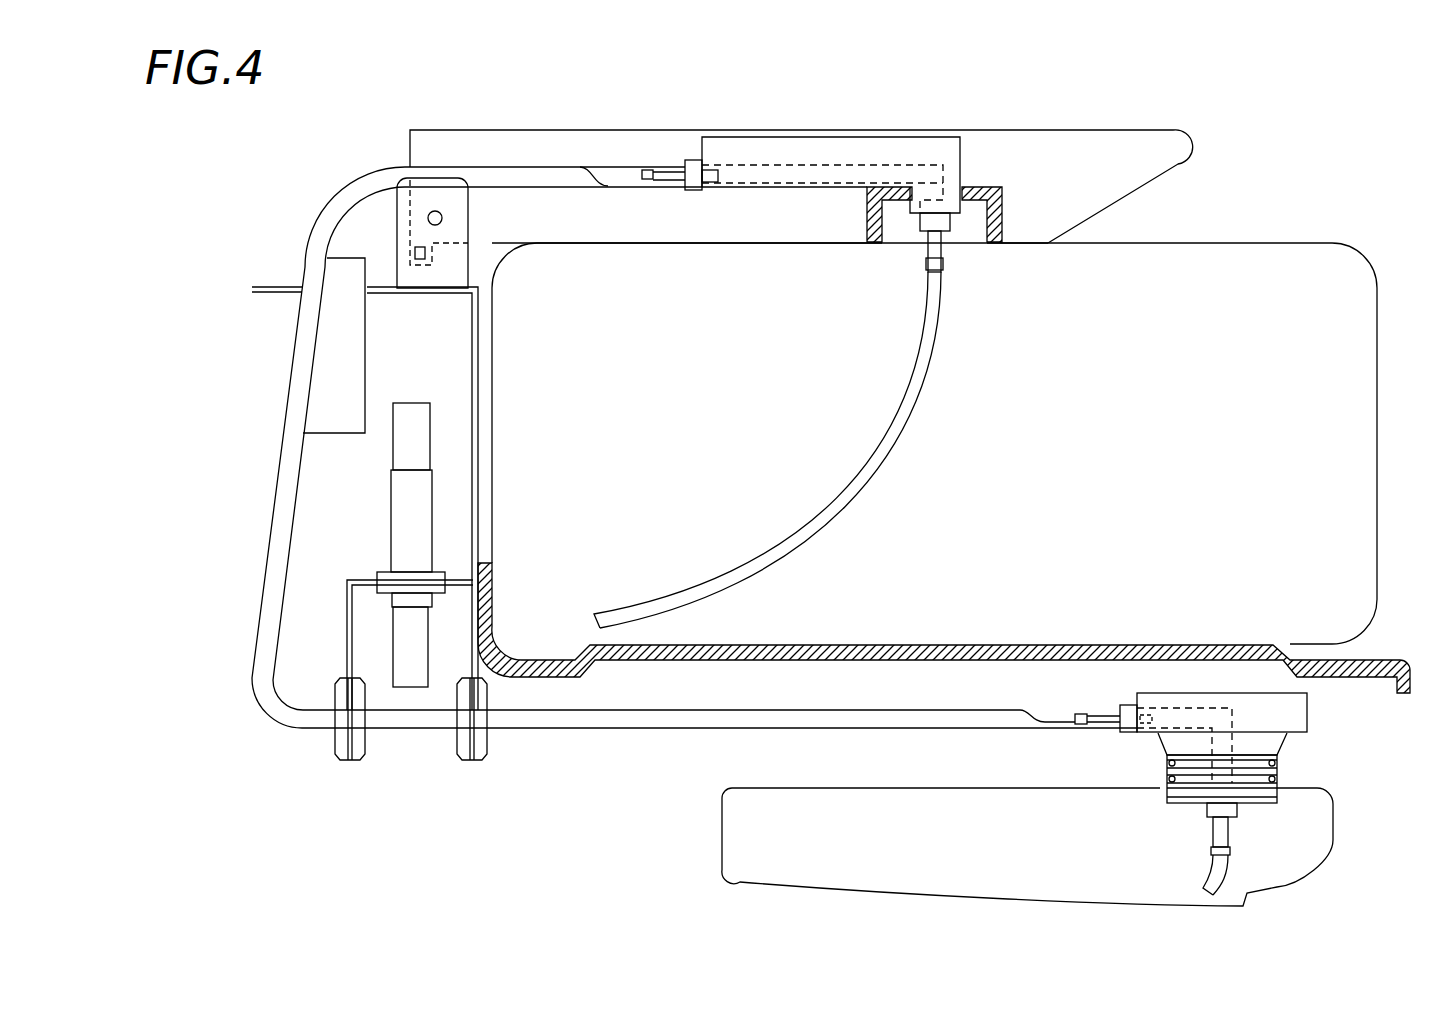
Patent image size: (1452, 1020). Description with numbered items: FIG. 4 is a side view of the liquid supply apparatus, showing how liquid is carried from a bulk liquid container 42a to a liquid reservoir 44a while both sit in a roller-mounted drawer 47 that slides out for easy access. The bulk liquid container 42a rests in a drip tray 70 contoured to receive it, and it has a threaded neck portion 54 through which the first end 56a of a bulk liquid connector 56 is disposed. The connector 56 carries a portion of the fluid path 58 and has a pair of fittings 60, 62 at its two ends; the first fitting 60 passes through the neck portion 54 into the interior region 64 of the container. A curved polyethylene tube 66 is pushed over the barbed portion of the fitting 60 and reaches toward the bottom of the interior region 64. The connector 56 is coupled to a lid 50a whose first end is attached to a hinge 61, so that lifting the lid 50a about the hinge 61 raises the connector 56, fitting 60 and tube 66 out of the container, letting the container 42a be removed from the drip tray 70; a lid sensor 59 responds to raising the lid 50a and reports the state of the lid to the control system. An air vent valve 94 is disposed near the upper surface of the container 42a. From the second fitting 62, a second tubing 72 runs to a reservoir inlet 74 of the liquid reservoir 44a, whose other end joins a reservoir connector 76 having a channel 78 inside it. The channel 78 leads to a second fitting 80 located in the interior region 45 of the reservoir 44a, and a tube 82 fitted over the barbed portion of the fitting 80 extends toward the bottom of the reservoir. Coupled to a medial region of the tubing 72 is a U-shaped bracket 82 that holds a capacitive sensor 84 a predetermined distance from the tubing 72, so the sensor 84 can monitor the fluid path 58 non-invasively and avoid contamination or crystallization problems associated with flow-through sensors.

The bulk liquid container 42a is at (1236, 242).
The liquid reservoir 44a is at (776, 788).
The interior region of the liquid reservoir 45 is at (1026, 863).
The drawer 47 is at (1344, 198).
The lid 50a is at (648, 135).
The threaded neck portion 54 is at (885, 230).
The bulk liquid connector 56 is at (910, 160).
The first end of the bulk liquid connector 56a is at (951, 234).
The fluid path 58 is at (803, 170).
The lid sensor 59 is at (412, 253).
The first fitting 60 is at (942, 274).
The hinge 61 is at (433, 214).
The second fitting of the connector 62 is at (665, 165).
The interior region of the bulk liquid container 64 is at (694, 385).
The tube 66 is at (878, 470).
The drip tray 70 is at (882, 660).
The second tubing 72 is at (518, 177).
The reservoir inlet 74 is at (1110, 722).
The reservoir connector 76 is at (1308, 708).
The channel 78 is at (1180, 712).
The second fitting 80 is at (1225, 822).
The tube / U shaped bracket 82 is at (370, 580).
The capacitive sensor 84 is at (405, 655).
The air vent valve 94 is at (330, 350).